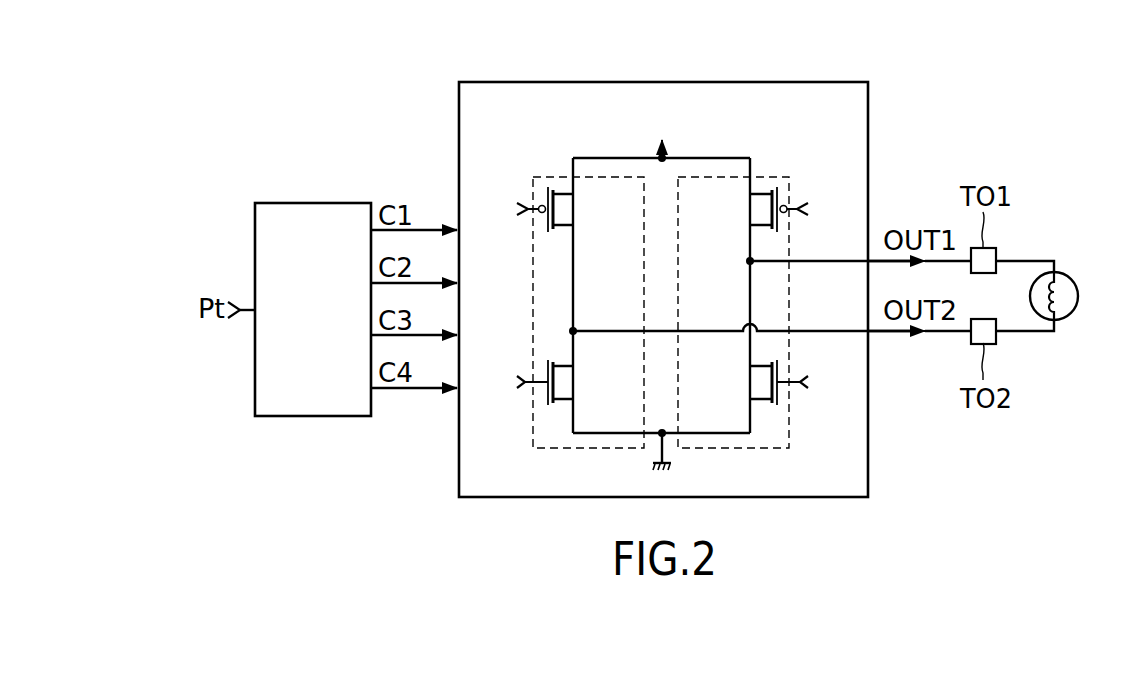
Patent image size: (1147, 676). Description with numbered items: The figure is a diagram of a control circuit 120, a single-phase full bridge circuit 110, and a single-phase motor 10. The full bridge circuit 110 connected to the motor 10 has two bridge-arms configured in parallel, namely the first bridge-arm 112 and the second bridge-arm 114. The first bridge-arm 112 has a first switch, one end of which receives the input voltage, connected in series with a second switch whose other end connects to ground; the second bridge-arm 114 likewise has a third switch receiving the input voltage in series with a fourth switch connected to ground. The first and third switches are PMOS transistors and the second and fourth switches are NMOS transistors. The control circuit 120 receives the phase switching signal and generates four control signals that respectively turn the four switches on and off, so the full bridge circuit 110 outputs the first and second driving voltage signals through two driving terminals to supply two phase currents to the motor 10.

The motor 10 is at (1072, 280).
The full bridge circuit 110 is at (727, 82).
The first bridge-arm 112 is at (554, 177).
The second bridge-arm 114 is at (768, 177).
The control circuit 120 is at (312, 203).